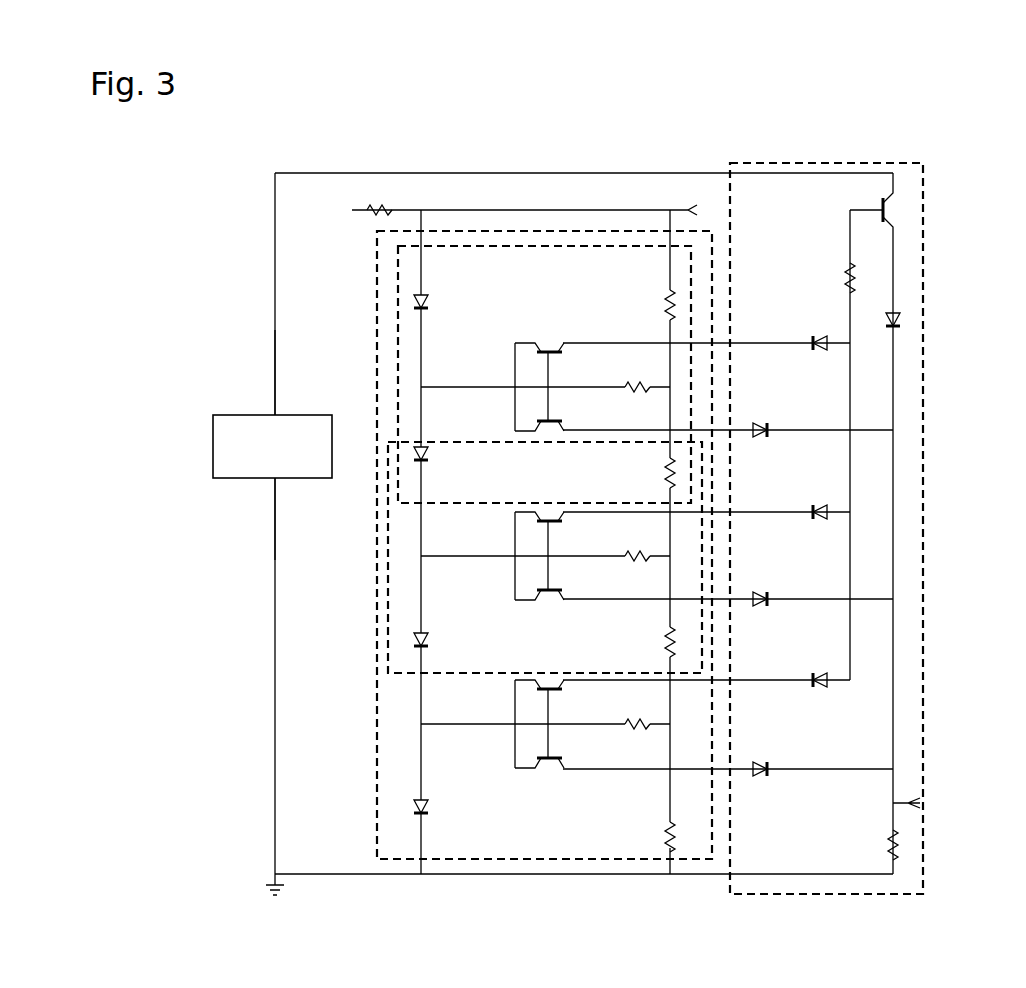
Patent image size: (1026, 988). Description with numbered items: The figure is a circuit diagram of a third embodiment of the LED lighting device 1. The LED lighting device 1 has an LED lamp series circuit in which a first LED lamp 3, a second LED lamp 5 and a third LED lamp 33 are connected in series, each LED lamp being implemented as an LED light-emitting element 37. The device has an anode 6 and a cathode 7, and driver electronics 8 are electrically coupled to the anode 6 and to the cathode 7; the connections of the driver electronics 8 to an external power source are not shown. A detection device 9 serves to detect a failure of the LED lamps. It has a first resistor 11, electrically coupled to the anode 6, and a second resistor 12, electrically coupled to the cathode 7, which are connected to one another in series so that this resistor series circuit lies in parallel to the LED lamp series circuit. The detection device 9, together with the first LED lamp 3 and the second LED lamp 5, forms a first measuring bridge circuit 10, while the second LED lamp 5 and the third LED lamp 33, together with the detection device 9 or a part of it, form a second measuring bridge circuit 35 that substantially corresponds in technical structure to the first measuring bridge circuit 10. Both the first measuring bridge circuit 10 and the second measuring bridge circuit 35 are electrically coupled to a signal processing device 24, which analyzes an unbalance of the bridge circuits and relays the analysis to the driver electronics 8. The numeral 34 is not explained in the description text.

The LED lighting device 1 is at (660, 128).
The first LED lamp 3 is at (377, 302).
The second LED lamp 5 is at (402, 455).
The anode 6 is at (275, 385).
The cathode 7 is at (275, 502).
The driver electronics 8 is at (272, 443).
The detection device 9 is at (465, 230).
The first measuring bridge circuit 10 is at (546, 248).
The first resistor 11 is at (682, 302).
The second resistor 12 is at (682, 475).
The signal processing device 24 is at (793, 160).
The third LED lamp 33 is at (360, 640).
The third measuring resistor 34 is at (682, 640).
The second measuring bridge circuit 35 is at (492, 673).
The LED light-emitting element 37 is at (230, 539).